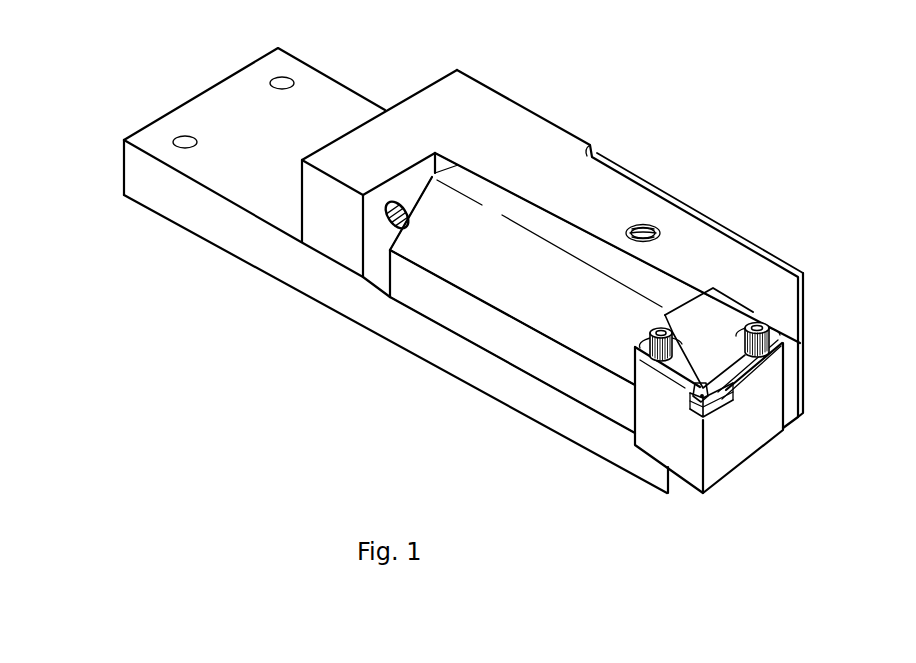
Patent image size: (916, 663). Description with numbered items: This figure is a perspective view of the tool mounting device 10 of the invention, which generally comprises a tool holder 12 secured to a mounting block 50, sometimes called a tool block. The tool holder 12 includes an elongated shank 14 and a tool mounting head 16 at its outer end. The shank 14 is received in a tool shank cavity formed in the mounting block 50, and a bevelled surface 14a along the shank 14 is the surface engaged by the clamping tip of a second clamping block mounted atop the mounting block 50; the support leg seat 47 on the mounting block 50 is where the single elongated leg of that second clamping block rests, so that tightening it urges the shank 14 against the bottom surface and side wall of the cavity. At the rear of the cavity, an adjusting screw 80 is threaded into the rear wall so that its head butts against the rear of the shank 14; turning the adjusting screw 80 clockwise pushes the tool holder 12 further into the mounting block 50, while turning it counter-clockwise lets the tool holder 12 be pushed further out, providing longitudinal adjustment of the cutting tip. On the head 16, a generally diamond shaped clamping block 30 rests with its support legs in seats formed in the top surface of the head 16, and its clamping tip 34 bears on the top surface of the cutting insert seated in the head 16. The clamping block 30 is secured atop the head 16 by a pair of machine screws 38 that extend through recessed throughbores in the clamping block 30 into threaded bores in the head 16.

The tool mounting device 10 is at (515, 271).
The mounting block 50 is at (500, 93).
The support leg seat 47 is at (681, 206).
The tool holder 12 is at (576, 313).
The shank 14 is at (446, 300).
The bevelled surface 14a is at (525, 310).
The adjusting screw 80 is at (386, 205).
The tool mounting head 16 is at (763, 430).
The clamping tip 34 is at (692, 387).
The machine screws 38 is at (764, 340).
The clamping block 30 is at (738, 366).